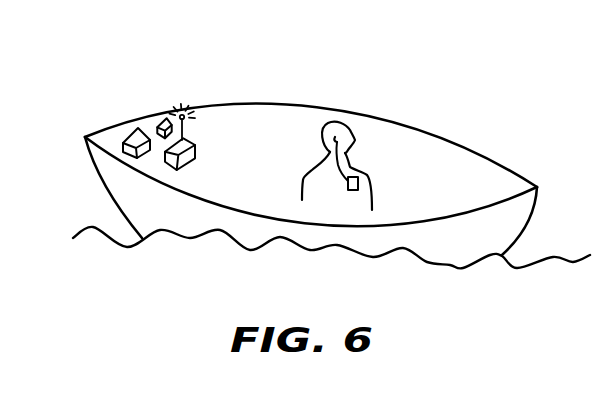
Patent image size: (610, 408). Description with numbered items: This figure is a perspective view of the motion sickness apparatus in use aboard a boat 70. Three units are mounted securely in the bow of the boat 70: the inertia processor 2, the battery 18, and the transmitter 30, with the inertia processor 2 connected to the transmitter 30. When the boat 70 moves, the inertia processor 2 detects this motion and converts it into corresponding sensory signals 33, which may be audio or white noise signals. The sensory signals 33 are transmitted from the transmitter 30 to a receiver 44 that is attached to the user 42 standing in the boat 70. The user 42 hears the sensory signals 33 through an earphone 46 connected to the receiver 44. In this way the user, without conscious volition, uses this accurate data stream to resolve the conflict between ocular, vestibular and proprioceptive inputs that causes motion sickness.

The inertia processor 2 is at (125, 140).
The battery 18 is at (161, 118).
The transmitter 30 is at (196, 156).
The sensory signals 33 is at (195, 95).
The user 42 is at (363, 130).
The receiver 44 is at (367, 180).
The earphone 46 is at (332, 158).
The boat 70 is at (485, 143).